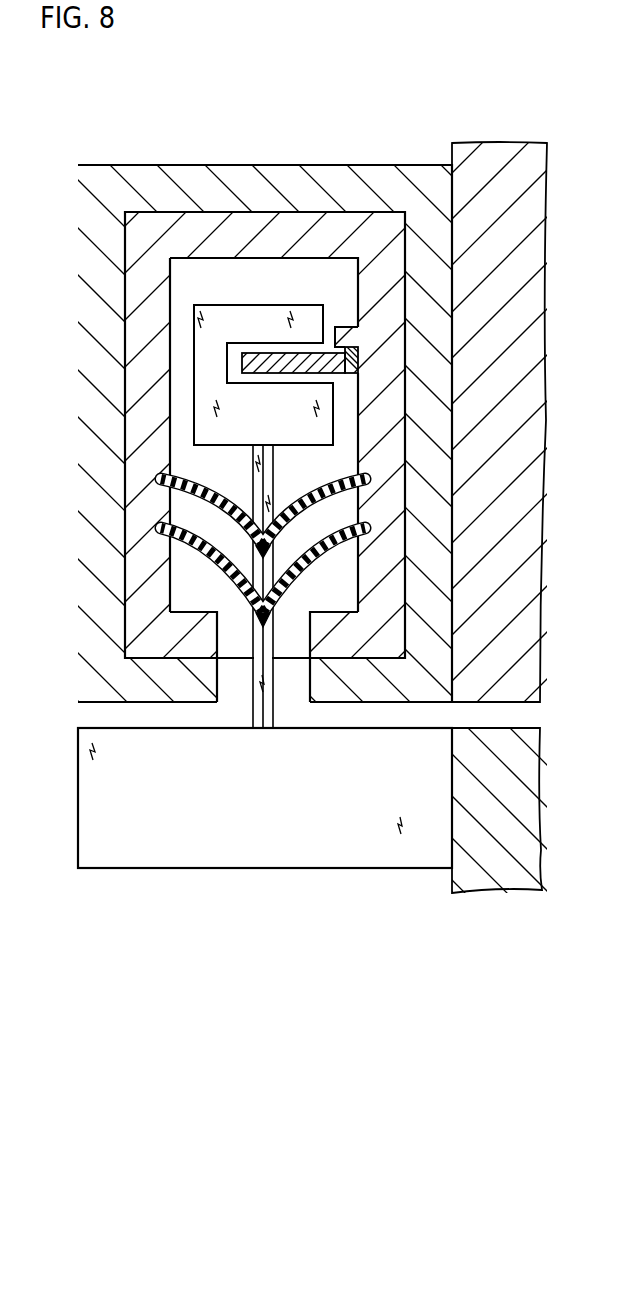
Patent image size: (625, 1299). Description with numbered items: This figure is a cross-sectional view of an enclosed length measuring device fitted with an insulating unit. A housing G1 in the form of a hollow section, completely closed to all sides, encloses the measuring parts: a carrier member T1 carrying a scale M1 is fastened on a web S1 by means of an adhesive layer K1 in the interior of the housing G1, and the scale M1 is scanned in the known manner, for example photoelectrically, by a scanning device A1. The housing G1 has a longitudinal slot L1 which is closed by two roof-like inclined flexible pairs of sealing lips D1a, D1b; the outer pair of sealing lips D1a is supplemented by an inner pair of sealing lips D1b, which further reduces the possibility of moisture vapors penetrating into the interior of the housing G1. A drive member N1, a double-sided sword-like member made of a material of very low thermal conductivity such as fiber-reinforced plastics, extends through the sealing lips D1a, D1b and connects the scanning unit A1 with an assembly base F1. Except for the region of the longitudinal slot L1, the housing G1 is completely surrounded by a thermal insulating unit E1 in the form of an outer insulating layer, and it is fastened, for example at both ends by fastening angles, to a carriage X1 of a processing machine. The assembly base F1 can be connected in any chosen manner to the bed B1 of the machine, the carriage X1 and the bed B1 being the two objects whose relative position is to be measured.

The thermal insulating unit E1 is at (93, 378).
The housing G1 is at (148, 318).
The carriage X1 is at (522, 638).
The bed B1 is at (525, 758).
The assembly base F1 is at (348, 856).
The scanning device A1 is at (232, 325).
The scale M1 is at (280, 383).
The carrier member T1 is at (267, 357).
The web S1 is at (347, 337).
The adhesive layer K1 is at (353, 375).
The longitudinal slot L1 is at (292, 640).
The drive member N1 is at (271, 685).
The inner pair of sealing lips D1b is at (212, 486).
The outer pair of sealing lips D1a is at (203, 542).